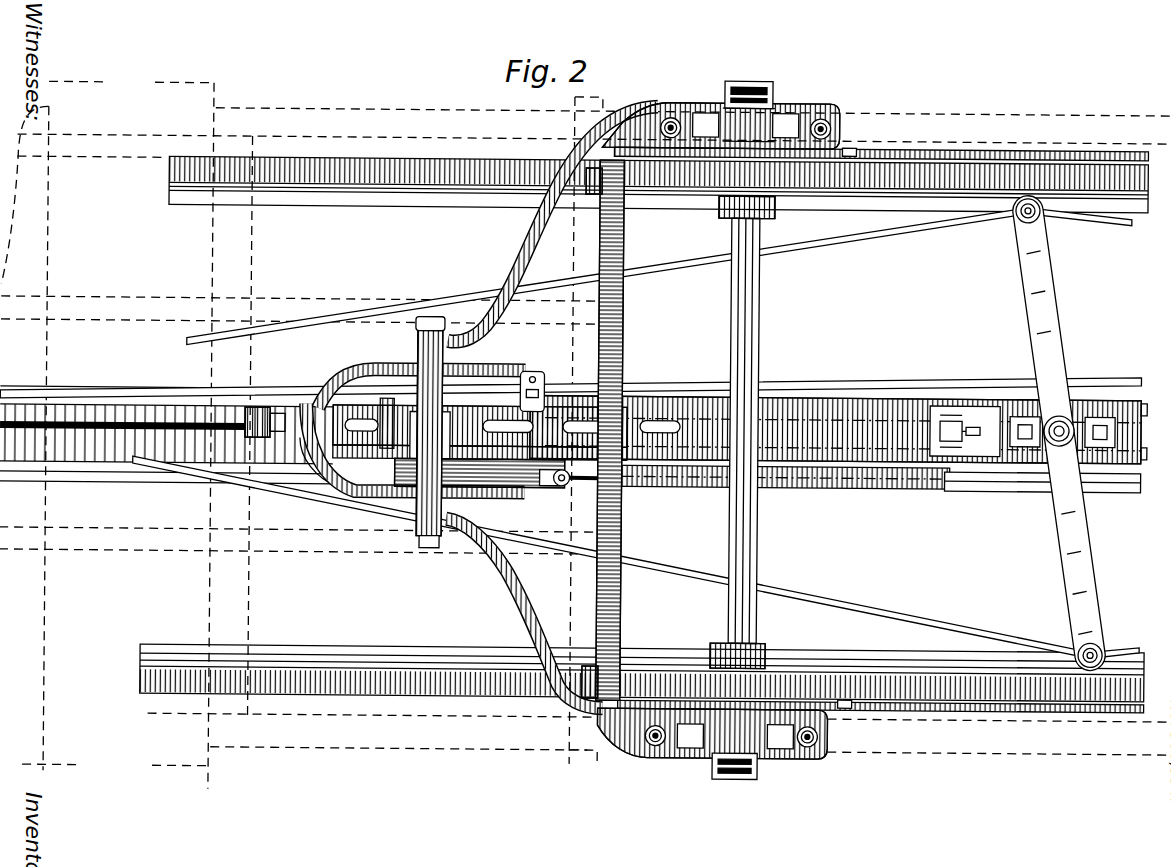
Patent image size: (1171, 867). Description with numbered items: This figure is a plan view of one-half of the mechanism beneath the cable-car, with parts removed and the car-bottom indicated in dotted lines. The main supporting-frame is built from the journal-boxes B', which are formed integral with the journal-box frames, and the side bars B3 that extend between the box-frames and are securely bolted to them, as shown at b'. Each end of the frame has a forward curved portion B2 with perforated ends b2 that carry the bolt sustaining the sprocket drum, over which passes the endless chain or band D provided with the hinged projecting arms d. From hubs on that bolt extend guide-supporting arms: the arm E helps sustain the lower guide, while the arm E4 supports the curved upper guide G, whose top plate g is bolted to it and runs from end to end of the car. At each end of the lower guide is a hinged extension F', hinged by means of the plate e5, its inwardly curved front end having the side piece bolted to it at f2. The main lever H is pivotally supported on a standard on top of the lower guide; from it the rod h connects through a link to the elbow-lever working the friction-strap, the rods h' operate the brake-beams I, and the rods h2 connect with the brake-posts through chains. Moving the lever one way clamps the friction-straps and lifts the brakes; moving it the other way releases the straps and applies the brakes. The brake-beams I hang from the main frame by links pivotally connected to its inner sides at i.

The journal-boxes B' is at (719, 420).
The forward curved portion of the main supporting-frame B2 is at (518, 240).
The side bars of the main frame B3 is at (968, 148).
The bolts b' is at (858, 415).
The perforated ends b2 is at (415, 336).
The projecting arms d is at (430, 434).
The endless chain or band D is at (678, 440).
The guide-supporting arm E is at (510, 500).
The guide-supporting arm E4 is at (345, 500).
The plate e5 is at (562, 488).
The extension F' is at (422, 372).
The bolt f2 is at (275, 408).
The top plate g is at (608, 465).
The curved upper guide G is at (475, 473).
The rod h is at (858, 446).
The rods h' is at (571, 436).
The rods h2 is at (852, 232).
The main lever H is at (1112, 440).
The pivotal connections of the links i is at (586, 192).
The brake-beams I is at (620, 606).